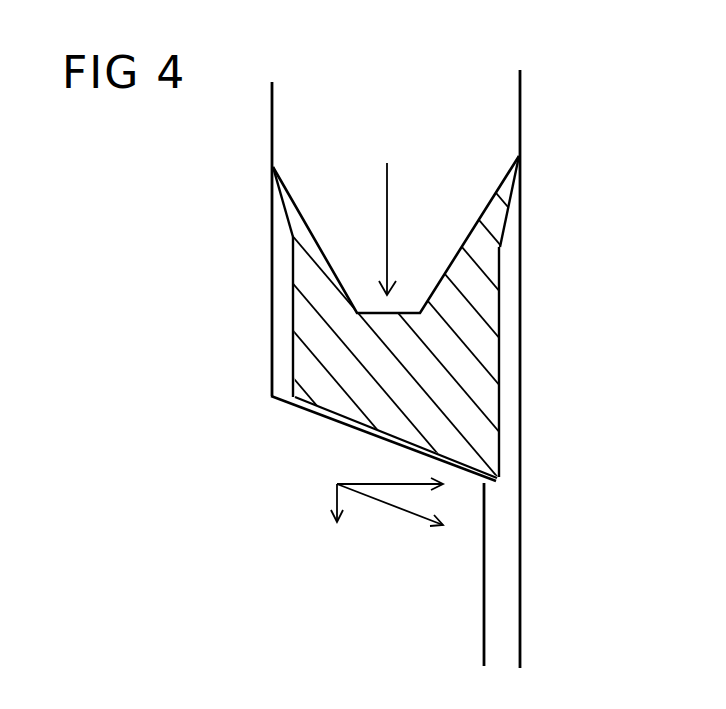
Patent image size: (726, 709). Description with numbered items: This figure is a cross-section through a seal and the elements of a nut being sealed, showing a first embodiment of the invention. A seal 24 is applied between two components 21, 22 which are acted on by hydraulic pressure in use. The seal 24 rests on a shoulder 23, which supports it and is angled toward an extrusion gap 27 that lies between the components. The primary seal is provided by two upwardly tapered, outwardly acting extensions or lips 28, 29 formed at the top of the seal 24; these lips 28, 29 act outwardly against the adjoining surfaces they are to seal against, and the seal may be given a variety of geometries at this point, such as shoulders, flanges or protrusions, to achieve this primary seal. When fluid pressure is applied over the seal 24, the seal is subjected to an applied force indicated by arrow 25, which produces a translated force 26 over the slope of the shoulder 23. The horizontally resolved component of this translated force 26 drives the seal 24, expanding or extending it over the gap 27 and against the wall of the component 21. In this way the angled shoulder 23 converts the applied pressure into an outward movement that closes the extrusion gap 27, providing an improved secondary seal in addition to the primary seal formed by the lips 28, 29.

The component 21 is at (634, 304).
The component 22 is at (196, 303).
The shoulder 23 is at (318, 417).
The seal 24 is at (478, 237).
The direction of flame / heating 25 is at (385, 175).
The translated force 26 is at (397, 515).
The extrusion gap 27 is at (503, 540).
The lip 28 is at (288, 176).
The lip 29 is at (512, 163).